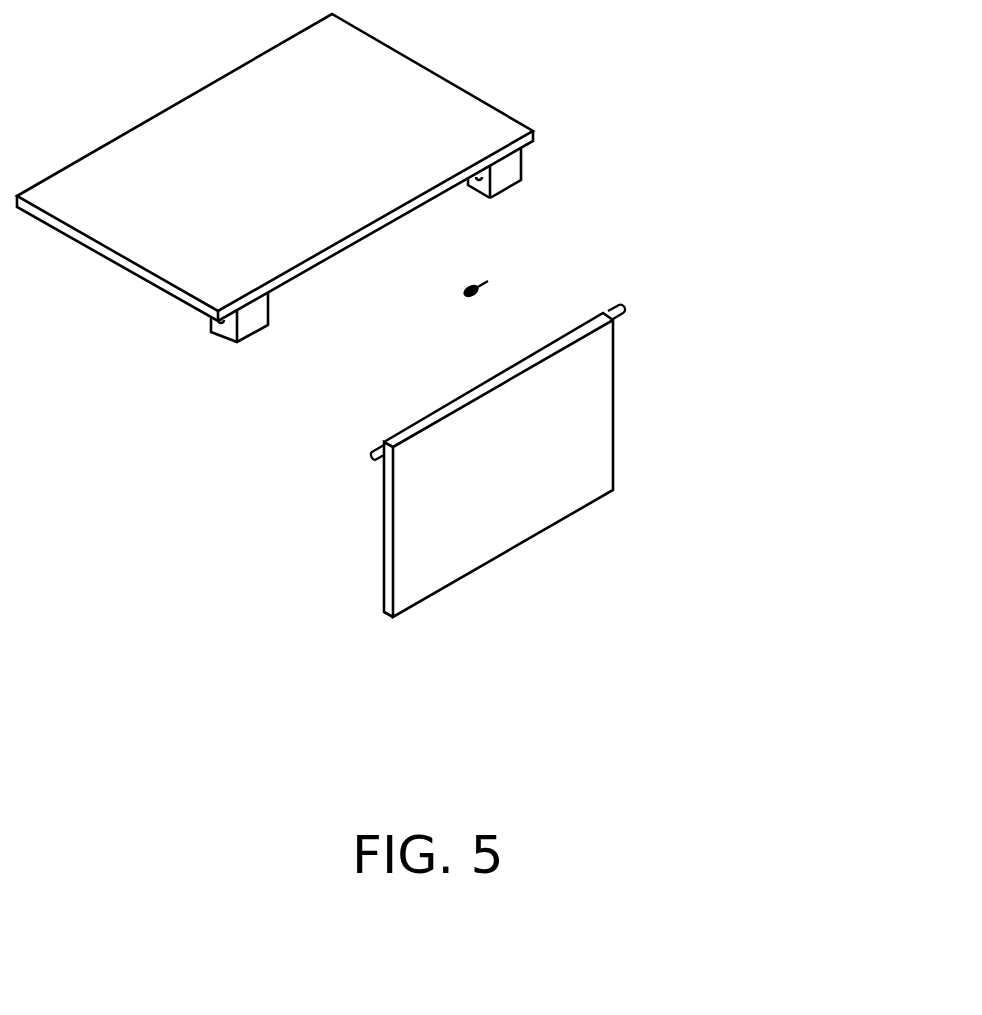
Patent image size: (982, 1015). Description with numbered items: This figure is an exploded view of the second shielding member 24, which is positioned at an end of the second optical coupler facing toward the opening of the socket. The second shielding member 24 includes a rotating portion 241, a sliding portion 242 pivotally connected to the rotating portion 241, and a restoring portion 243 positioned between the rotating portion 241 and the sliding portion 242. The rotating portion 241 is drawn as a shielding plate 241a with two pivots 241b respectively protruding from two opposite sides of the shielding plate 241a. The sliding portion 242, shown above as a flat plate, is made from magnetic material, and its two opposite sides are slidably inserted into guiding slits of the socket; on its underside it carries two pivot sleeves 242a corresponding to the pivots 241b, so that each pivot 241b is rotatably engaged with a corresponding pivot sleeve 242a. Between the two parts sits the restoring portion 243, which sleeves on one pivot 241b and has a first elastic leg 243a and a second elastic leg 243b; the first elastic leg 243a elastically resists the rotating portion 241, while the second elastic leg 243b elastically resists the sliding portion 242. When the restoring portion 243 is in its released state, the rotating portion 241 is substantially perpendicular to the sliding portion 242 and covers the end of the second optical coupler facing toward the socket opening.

The second shielding member 24 is at (783, 82).
The rotating portion 241 is at (719, 298).
The shielding plate 241a is at (593, 388).
The pivot 241b is at (623, 313).
The sliding portion 242 is at (475, 128).
The pivot sleeve 242a is at (253, 322).
The restoring portion 243 is at (488, 281).
The first elastic leg 243a is at (463, 298).
The second elastic leg 243b is at (481, 283).